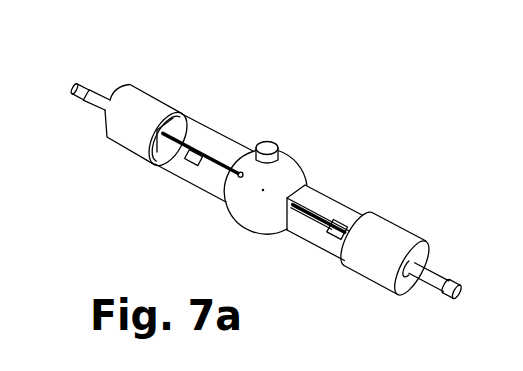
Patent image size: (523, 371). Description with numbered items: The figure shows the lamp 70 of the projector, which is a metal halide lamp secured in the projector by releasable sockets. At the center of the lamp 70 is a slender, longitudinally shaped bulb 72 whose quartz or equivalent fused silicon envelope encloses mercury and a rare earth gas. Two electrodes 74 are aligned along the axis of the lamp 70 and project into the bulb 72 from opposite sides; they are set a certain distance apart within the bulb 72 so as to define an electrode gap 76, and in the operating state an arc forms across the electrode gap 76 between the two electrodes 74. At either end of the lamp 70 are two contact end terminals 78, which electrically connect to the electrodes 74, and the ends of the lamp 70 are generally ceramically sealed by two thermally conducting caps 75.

The lamp 70 is at (395, 180).
The bulb 72 is at (230, 210).
The electrodes 74 is at (215, 167).
The thermally conducting caps 75 is at (152, 108).
The electrode gap 76 is at (263, 190).
The contact end terminals 78 is at (75, 90).